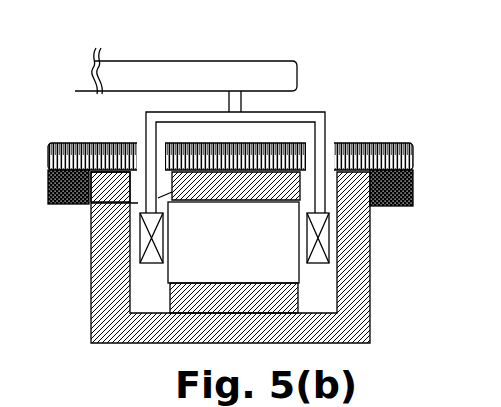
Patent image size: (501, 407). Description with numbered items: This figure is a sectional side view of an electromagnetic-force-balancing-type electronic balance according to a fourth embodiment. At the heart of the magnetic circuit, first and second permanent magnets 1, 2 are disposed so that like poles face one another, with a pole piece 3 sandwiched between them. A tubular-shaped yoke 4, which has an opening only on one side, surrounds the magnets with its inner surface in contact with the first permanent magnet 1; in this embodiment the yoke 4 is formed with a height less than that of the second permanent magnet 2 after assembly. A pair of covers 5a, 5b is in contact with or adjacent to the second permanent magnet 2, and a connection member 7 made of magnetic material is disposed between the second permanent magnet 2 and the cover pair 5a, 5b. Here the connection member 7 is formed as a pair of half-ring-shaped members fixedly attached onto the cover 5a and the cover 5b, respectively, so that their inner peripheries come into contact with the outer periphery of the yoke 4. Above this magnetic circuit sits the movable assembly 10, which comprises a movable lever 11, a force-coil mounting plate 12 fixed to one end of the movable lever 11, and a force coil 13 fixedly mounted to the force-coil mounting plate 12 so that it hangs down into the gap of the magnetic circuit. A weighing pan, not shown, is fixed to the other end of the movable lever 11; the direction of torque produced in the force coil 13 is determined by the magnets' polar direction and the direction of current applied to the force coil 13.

The first permanent magnet 1 is at (285, 300).
The second permanent magnet 2 is at (92, 204).
The pole piece 3 is at (293, 258).
The yoke 4 is at (91, 312).
The cover 5a is at (339, 144).
The cover 5b is at (206, 155).
The connection member 7 is at (48, 200).
The movable assembly 10 is at (318, 52).
The movable lever 11 is at (117, 85).
The force-coil mounting plate 12 is at (143, 116).
The force coil 13 is at (142, 250).